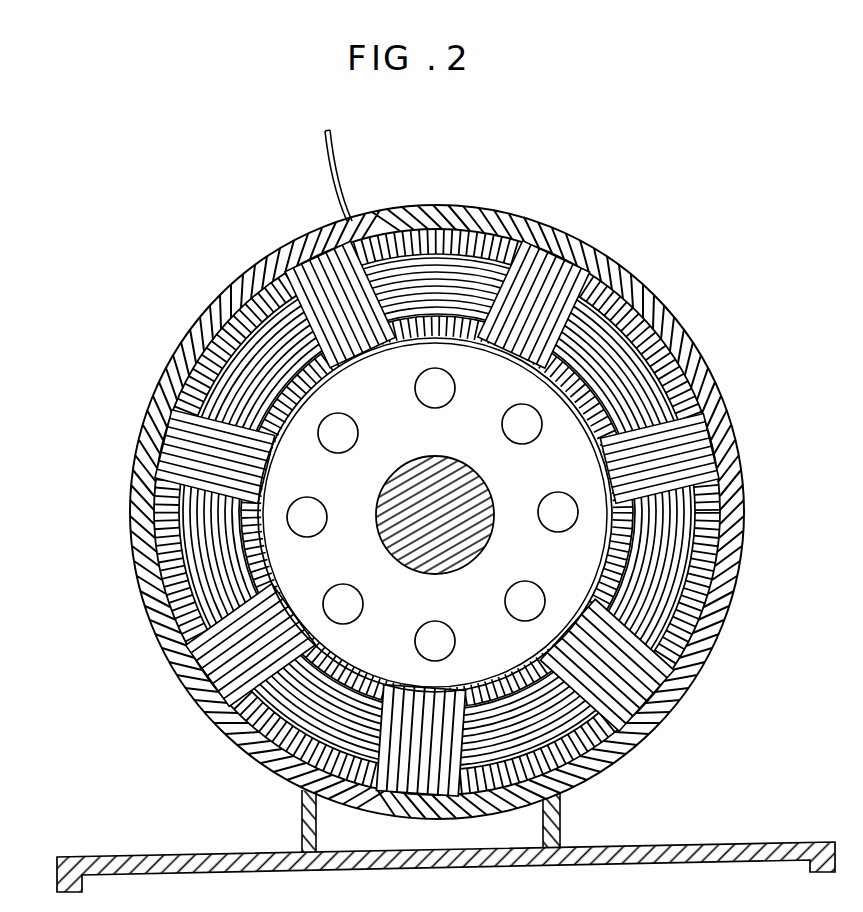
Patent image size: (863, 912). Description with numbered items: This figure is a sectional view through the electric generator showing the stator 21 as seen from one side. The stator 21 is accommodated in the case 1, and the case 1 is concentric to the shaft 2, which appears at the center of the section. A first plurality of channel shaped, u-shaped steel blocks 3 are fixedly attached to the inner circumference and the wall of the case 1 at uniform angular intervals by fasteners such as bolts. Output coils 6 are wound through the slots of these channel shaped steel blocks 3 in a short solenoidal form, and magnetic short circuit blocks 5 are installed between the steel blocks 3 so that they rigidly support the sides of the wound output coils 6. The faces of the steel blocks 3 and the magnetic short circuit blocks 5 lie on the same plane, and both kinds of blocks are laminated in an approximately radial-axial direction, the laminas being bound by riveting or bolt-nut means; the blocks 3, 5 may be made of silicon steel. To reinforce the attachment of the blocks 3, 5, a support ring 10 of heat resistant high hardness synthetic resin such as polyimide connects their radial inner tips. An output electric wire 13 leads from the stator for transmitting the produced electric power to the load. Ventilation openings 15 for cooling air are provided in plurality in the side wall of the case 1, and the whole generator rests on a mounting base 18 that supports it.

The stator 21 is at (393, 477).
The case 1 is at (226, 307).
The shaft 2 is at (390, 532).
The channel shaped steel blocks 3 is at (432, 236).
The magnetic short circuit blocks 5 is at (337, 276).
The output coils 6 is at (438, 270).
The support ring 10 is at (587, 417).
The output electric wire 13 is at (345, 158).
The ventilation openings 15 is at (350, 434).
The mounting base 18 is at (177, 866).